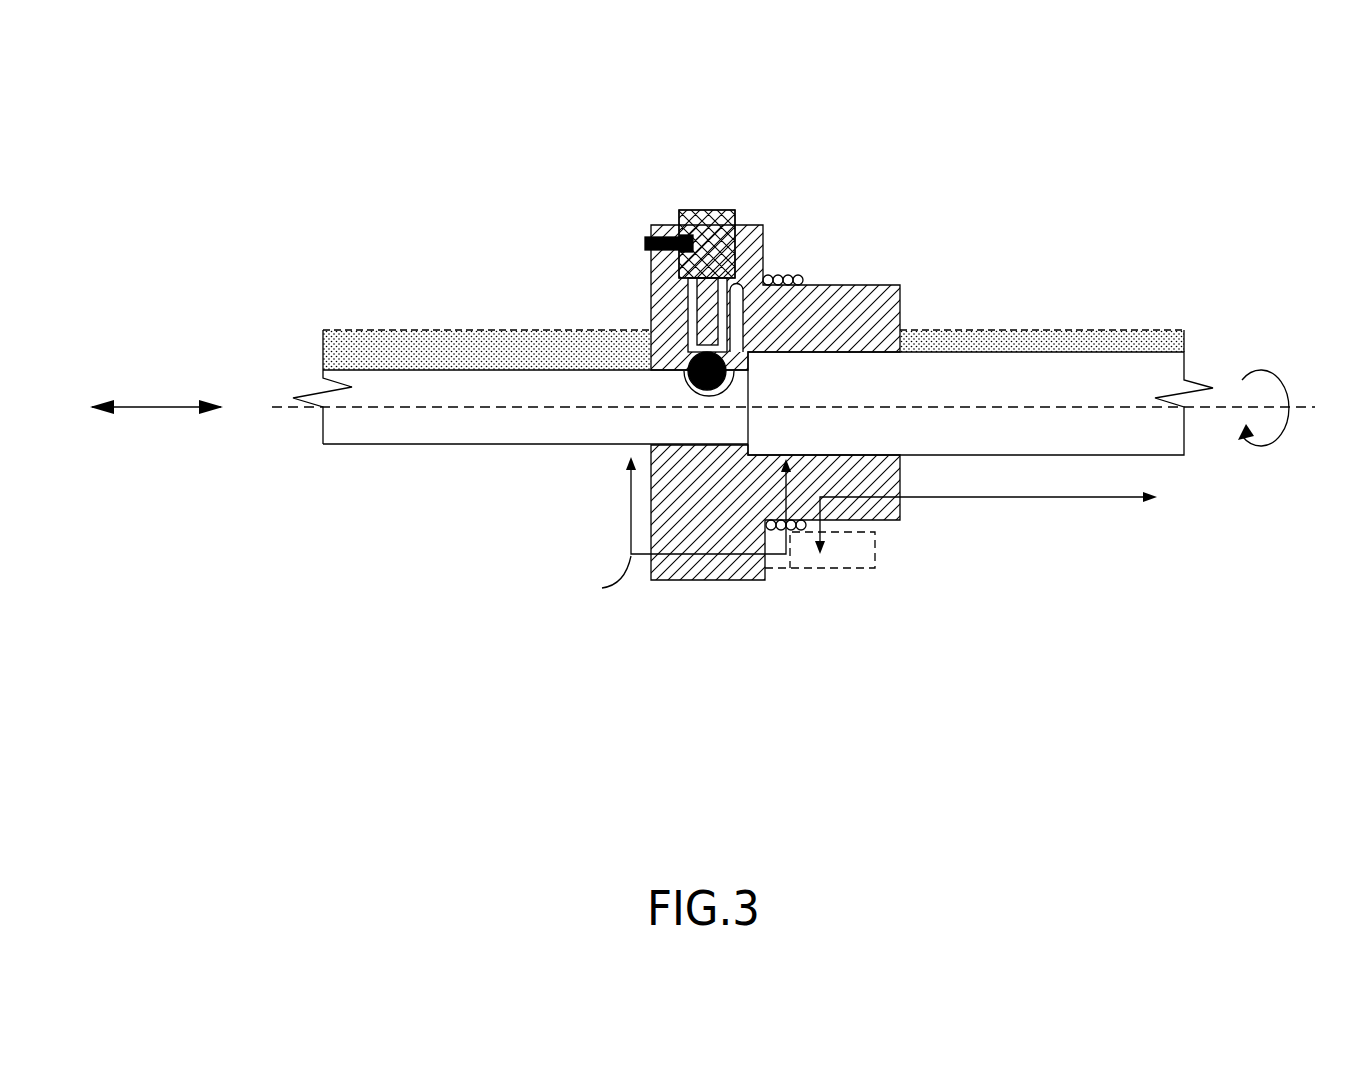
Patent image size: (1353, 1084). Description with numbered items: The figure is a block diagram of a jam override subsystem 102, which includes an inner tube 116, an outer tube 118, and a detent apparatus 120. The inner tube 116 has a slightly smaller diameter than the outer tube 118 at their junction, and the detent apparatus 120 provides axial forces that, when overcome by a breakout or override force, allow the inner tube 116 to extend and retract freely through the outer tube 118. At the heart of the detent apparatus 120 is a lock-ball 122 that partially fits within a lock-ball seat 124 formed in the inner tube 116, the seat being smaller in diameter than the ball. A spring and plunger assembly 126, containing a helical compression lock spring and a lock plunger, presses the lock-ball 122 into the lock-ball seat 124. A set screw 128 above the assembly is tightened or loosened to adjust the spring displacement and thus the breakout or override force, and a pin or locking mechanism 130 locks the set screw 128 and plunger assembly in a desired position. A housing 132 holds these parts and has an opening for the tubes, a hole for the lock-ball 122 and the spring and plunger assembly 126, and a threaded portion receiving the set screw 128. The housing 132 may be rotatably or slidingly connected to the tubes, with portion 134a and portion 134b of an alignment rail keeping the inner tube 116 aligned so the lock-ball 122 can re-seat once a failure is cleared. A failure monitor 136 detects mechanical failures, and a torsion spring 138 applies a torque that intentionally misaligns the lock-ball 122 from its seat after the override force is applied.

The jam override subsystem 102 is at (349, 114).
The inner tube 116 is at (370, 445).
The outer tube 118 is at (1160, 455).
The detent apparatus 120 is at (908, 152).
The lock-ball 122 is at (703, 392).
The lock-ball seat 124 is at (687, 370).
The spring and plunger assembly 126 is at (744, 318).
The set screw 128 is at (708, 210).
The pin or locking mechanism 130 is at (645, 243).
The housing 132 is at (857, 300).
The portion of the alignment rail 134a is at (368, 330).
The portion of the alignment rail 134b is at (1160, 330).
The failure monitor 136 is at (857, 568).
The torsion spring 138 is at (786, 276).